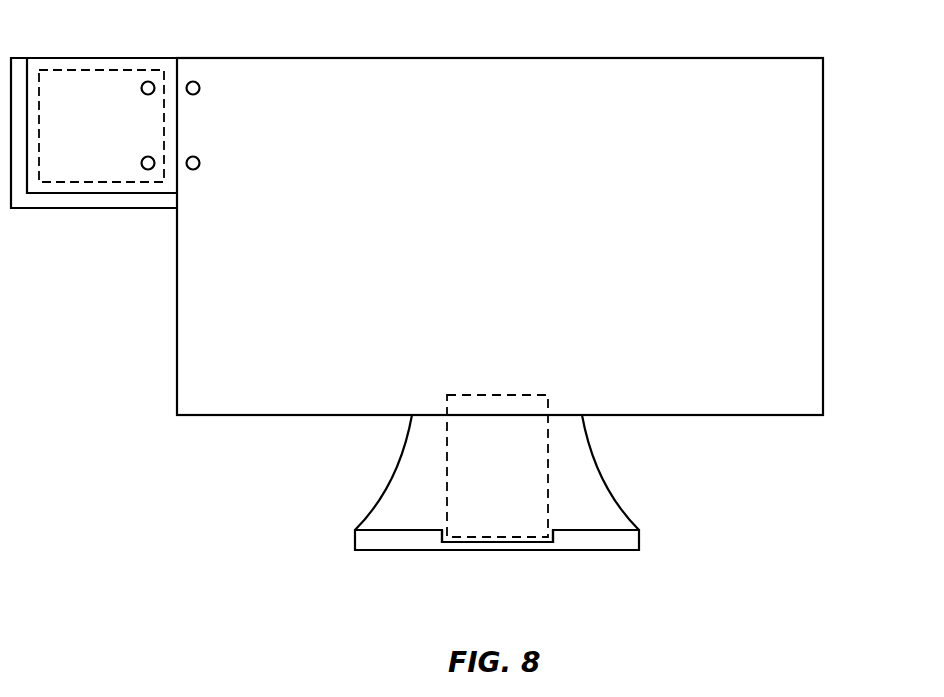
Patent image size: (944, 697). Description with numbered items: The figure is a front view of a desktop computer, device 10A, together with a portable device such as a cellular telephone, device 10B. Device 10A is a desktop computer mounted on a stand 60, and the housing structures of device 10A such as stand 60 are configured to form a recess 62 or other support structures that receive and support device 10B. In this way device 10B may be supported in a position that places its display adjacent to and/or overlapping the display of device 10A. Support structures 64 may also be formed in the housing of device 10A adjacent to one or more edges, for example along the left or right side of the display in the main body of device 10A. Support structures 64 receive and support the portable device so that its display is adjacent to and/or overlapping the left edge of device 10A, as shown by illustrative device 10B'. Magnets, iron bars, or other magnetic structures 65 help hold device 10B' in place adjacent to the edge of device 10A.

The device 10A is at (823, 140).
The device 10B is at (441, 466).
The device 10B' is at (101, 96).
The stand 60 is at (662, 420).
The recess 62 is at (463, 543).
The support structures 64 is at (80, 202).
The magnetic structures 65 is at (141, 88).